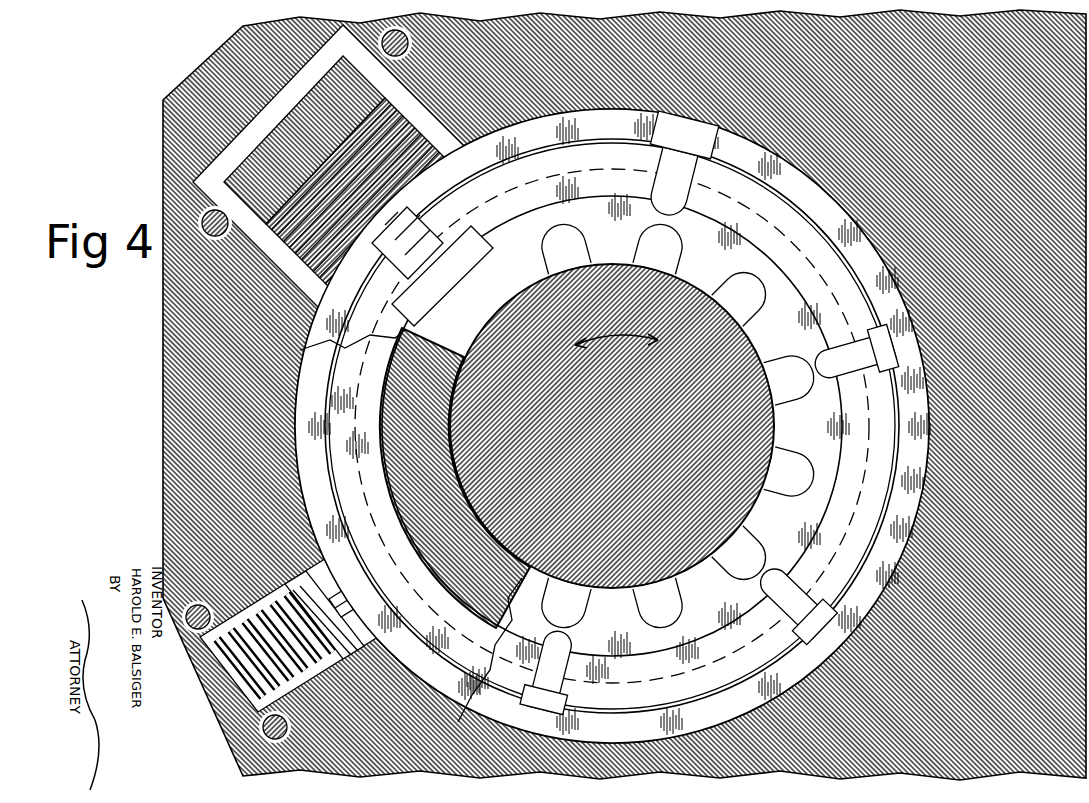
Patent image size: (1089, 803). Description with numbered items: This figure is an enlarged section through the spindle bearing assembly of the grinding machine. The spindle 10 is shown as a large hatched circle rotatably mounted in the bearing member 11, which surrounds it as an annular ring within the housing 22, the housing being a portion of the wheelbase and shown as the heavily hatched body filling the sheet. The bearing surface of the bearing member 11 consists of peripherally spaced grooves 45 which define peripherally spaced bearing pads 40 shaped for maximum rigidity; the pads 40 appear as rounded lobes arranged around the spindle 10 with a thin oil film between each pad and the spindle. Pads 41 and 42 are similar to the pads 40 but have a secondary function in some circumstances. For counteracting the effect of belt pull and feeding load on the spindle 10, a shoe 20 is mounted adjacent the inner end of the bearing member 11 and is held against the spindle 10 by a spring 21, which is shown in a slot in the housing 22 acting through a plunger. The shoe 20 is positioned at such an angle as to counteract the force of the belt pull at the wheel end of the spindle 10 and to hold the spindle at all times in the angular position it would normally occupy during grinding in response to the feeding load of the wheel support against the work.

The spindle 10 is at (612, 440).
The bearing member 11 is at (619, 423).
The shoe 20 is at (384, 342).
The spring 21 is at (232, 742).
The housing 22 is at (175, 345).
The bearing pad 40 is at (706, 290).
The pad 41 is at (760, 512).
The pad 42 is at (775, 360).
The groove 45 is at (765, 425).